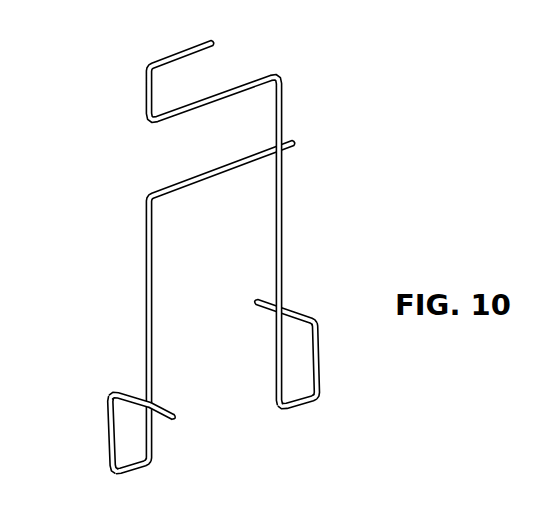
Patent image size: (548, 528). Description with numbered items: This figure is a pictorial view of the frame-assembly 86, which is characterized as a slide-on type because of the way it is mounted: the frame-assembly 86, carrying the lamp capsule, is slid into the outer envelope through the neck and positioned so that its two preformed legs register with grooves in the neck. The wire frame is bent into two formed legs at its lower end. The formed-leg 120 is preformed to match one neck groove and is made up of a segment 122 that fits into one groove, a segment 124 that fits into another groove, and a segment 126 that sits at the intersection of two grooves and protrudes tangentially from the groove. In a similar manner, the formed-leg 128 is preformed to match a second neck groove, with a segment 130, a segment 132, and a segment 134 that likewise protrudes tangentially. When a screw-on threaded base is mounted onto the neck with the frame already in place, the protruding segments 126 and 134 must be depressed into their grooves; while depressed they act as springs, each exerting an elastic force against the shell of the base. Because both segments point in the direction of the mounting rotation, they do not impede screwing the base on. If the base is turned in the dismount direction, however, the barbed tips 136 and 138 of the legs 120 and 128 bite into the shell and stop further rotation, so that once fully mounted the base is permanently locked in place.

The frame-assembly 86 is at (308, 148).
The formed-leg 120 is at (128, 434).
The segment 122 is at (140, 466).
The segment 124 is at (114, 438).
The segment 126 is at (153, 403).
The barbed tip 136 is at (173, 412).
The formed-leg 128 is at (306, 345).
The segment 130 is at (300, 408).
The segment 132 is at (319, 364).
The segment 134 is at (290, 308).
The barbed tip 138 is at (262, 303).